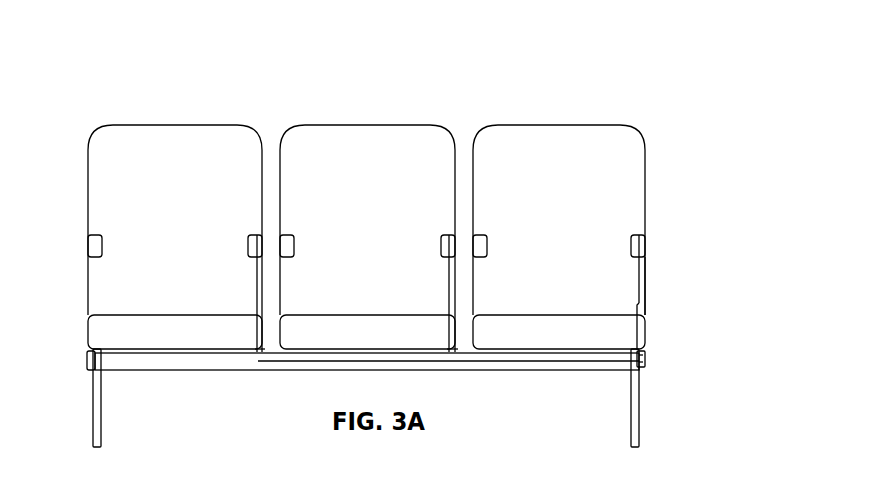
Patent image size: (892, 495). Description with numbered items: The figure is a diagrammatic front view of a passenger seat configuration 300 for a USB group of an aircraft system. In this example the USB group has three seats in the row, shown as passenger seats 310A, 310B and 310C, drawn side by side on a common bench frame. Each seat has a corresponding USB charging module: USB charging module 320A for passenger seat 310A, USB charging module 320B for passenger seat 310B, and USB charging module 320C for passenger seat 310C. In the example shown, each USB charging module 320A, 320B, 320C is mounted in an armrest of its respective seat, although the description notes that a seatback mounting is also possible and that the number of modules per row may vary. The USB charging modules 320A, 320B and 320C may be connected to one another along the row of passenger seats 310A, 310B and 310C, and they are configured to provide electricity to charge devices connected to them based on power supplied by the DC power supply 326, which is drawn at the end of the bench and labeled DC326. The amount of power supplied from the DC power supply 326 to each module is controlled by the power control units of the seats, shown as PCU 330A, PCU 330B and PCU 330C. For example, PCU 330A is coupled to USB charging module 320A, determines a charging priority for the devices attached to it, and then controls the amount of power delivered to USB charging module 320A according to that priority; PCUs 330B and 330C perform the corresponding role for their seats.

The passenger seat configuration 300 is at (91, 90).
The passenger seat 310A is at (588, 172).
The passenger seat 310B is at (396, 172).
The passenger seat 310C is at (205, 172).
The USB charging module 320A is at (643, 235).
The PCU 330A is at (641, 292).
The USB charging module 320B is at (450, 237).
The PCU 330B is at (452, 293).
The USB charging module 320C is at (258, 237).
The PCU 330C is at (260, 293).
The DC power supply 326 is at (647, 364).
The DC power supply DC326 is at (693, 373).